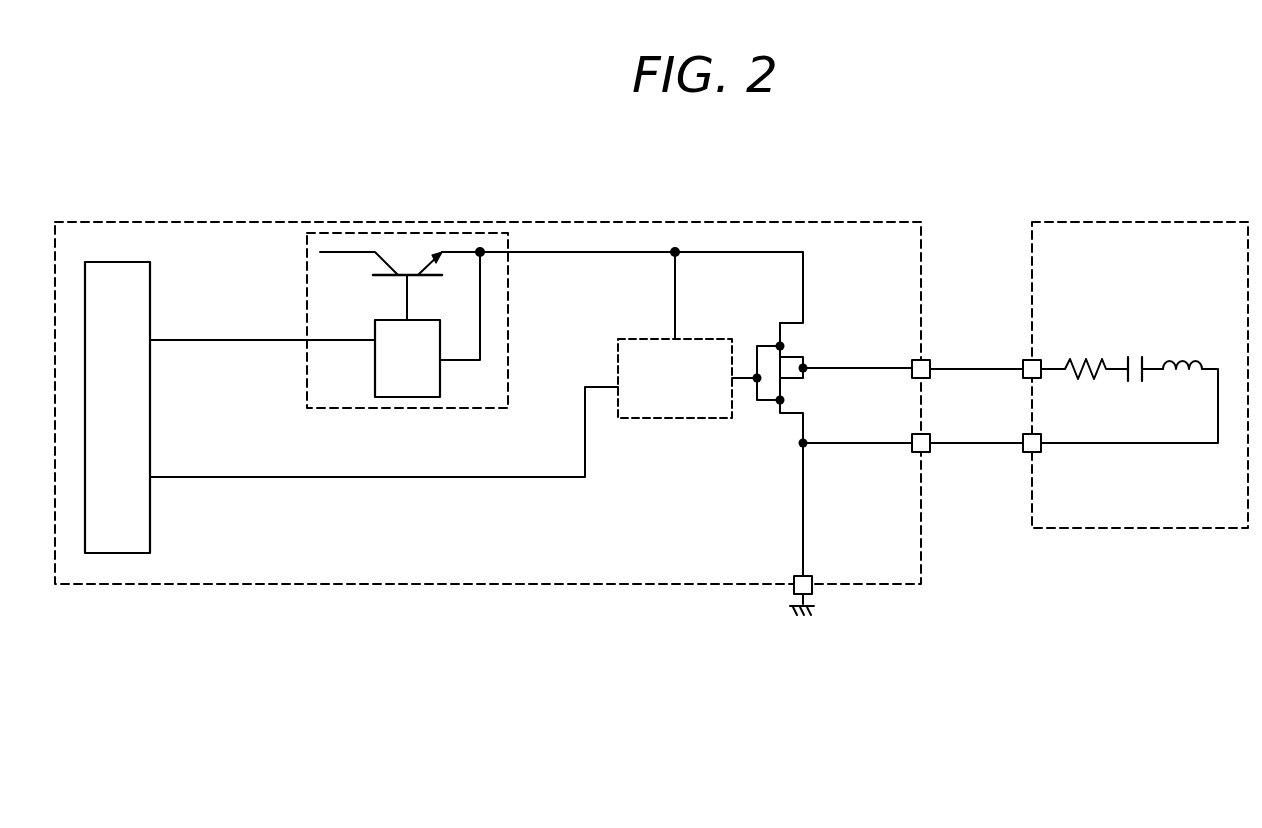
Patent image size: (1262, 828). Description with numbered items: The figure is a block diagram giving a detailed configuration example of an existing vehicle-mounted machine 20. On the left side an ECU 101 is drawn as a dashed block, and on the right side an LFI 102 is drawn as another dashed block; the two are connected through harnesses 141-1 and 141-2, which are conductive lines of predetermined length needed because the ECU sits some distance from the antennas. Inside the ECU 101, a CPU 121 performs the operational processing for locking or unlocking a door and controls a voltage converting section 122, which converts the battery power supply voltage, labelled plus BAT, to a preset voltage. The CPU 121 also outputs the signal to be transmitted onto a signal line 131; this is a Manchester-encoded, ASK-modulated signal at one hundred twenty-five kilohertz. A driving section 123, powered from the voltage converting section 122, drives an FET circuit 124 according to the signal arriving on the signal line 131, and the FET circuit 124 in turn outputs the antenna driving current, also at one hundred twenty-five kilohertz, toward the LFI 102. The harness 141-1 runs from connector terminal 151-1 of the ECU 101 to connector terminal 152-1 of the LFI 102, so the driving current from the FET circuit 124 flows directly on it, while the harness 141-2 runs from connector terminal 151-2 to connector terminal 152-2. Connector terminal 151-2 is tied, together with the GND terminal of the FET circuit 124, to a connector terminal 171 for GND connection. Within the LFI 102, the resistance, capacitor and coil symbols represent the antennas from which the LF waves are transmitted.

The vehicle-mounted machine 20 is at (692, 655).
The ECU 101 is at (487, 221).
The LFI 102 is at (1140, 221).
The CPU 121 is at (150, 405).
The voltage converting section 122 is at (508, 325).
The driving section 123 is at (672, 420).
The FET circuit 124 is at (790, 355).
The signal line 131 is at (403, 478).
The harness 141-1 is at (960, 366).
The harness 141-2 is at (960, 440).
The connector terminal 151-1 is at (912, 373).
The connector terminal 151-2 is at (930, 448).
The connector terminal 152-1 is at (1035, 361).
The connector terminal 152-2 is at (1042, 450).
The connector terminal for GND connection 171 is at (812, 576).